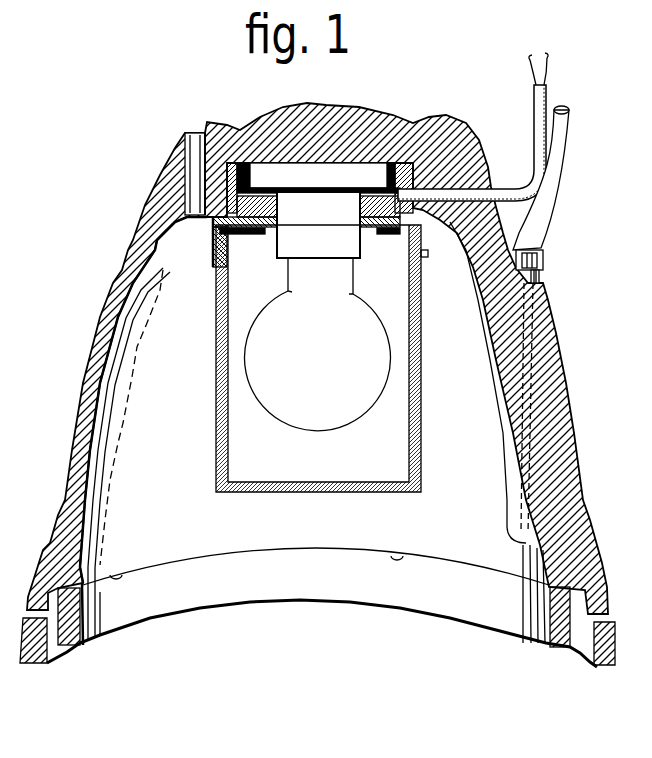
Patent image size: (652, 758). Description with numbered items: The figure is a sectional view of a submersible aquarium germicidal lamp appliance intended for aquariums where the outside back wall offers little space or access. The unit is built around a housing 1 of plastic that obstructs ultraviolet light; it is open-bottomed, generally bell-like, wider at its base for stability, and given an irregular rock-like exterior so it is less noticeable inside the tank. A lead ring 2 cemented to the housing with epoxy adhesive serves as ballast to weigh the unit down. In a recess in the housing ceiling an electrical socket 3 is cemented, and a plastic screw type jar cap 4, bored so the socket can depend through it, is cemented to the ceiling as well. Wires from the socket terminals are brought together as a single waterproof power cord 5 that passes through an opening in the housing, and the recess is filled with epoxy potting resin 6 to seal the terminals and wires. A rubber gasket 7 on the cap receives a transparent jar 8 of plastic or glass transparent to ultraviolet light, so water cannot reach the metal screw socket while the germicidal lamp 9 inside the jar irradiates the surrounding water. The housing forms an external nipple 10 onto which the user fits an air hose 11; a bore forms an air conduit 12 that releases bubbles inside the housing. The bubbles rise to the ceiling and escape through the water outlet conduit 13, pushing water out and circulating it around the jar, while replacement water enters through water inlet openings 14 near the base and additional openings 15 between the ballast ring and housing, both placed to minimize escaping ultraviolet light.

The housing 1 is at (110, 293).
The ring 2 is at (257, 593).
The electrical socket 3 is at (325, 232).
The screw type jar cap 4 is at (211, 246).
The power cord 5 is at (533, 128).
The epoxy potting resin 6 is at (336, 157).
The rubber gasket 7 is at (394, 236).
The transparent jar 8 is at (421, 405).
The germicidal lamp 9 is at (322, 366).
The nipple 10 is at (540, 283).
The air hose 11 is at (558, 185).
The air conduit 12 is at (521, 478).
The water outlet conduit 13 is at (197, 137).
The water inlet openings 14 is at (610, 621).
The additional openings 15 is at (396, 559).